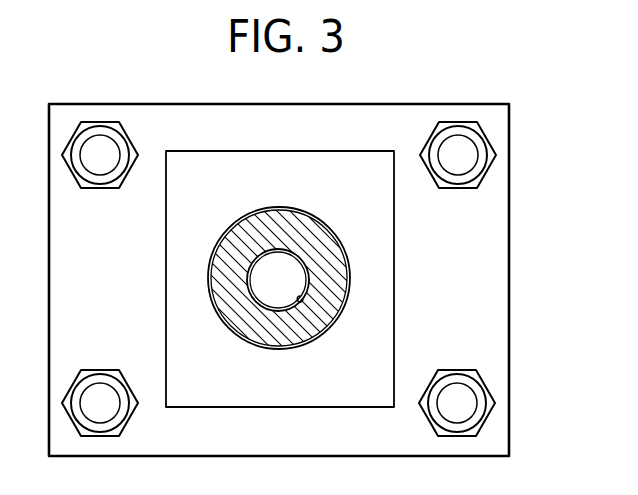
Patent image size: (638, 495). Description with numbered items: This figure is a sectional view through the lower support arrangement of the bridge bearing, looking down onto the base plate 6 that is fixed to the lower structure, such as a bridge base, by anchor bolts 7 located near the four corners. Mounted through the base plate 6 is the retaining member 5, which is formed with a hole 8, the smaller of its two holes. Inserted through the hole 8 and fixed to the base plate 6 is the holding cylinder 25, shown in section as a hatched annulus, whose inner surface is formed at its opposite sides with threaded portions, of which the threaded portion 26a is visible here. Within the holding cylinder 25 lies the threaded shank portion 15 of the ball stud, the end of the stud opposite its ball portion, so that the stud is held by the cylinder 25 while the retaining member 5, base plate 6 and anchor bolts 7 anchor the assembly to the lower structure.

The retaining member 5 is at (394, 212).
The base plate 6 is at (488, 291).
The anchor bolts 7 is at (100, 166).
The hole 8 is at (288, 215).
The threaded shank portion 15 is at (302, 277).
The holding cylinder 25 is at (240, 324).
The threaded portion 26a is at (302, 298).